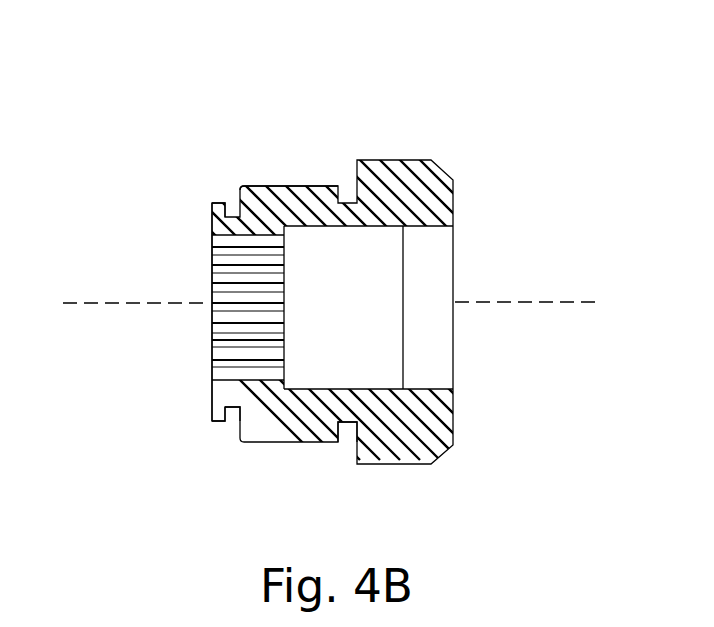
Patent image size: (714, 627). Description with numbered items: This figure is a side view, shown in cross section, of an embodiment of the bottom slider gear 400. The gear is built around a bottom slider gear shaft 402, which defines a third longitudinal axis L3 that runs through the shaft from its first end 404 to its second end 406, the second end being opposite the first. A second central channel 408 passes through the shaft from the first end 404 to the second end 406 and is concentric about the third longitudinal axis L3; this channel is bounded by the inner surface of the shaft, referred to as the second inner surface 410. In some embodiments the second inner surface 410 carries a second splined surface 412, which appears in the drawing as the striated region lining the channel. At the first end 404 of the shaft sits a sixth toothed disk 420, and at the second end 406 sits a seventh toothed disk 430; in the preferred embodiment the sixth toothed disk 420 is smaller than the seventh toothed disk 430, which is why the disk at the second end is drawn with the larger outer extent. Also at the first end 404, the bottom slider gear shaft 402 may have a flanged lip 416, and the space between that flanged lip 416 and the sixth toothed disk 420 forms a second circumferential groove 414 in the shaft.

The bottom slider gear 400 is at (107, 132).
The bottom slider gear shaft 402 is at (348, 425).
The first end 404 is at (192, 161).
The second end 406 is at (456, 144).
The second central channel 408 is at (207, 336).
The second inner surface 410 is at (220, 260).
The second splined surface 412 is at (210, 272).
The second circumferential groove 414 is at (225, 428).
The flanged lip 416 is at (212, 407).
The sixth toothed disk 420 is at (268, 185).
The seventh toothed disk 430 is at (395, 160).
The third longitudinal axis L3 is at (562, 302).